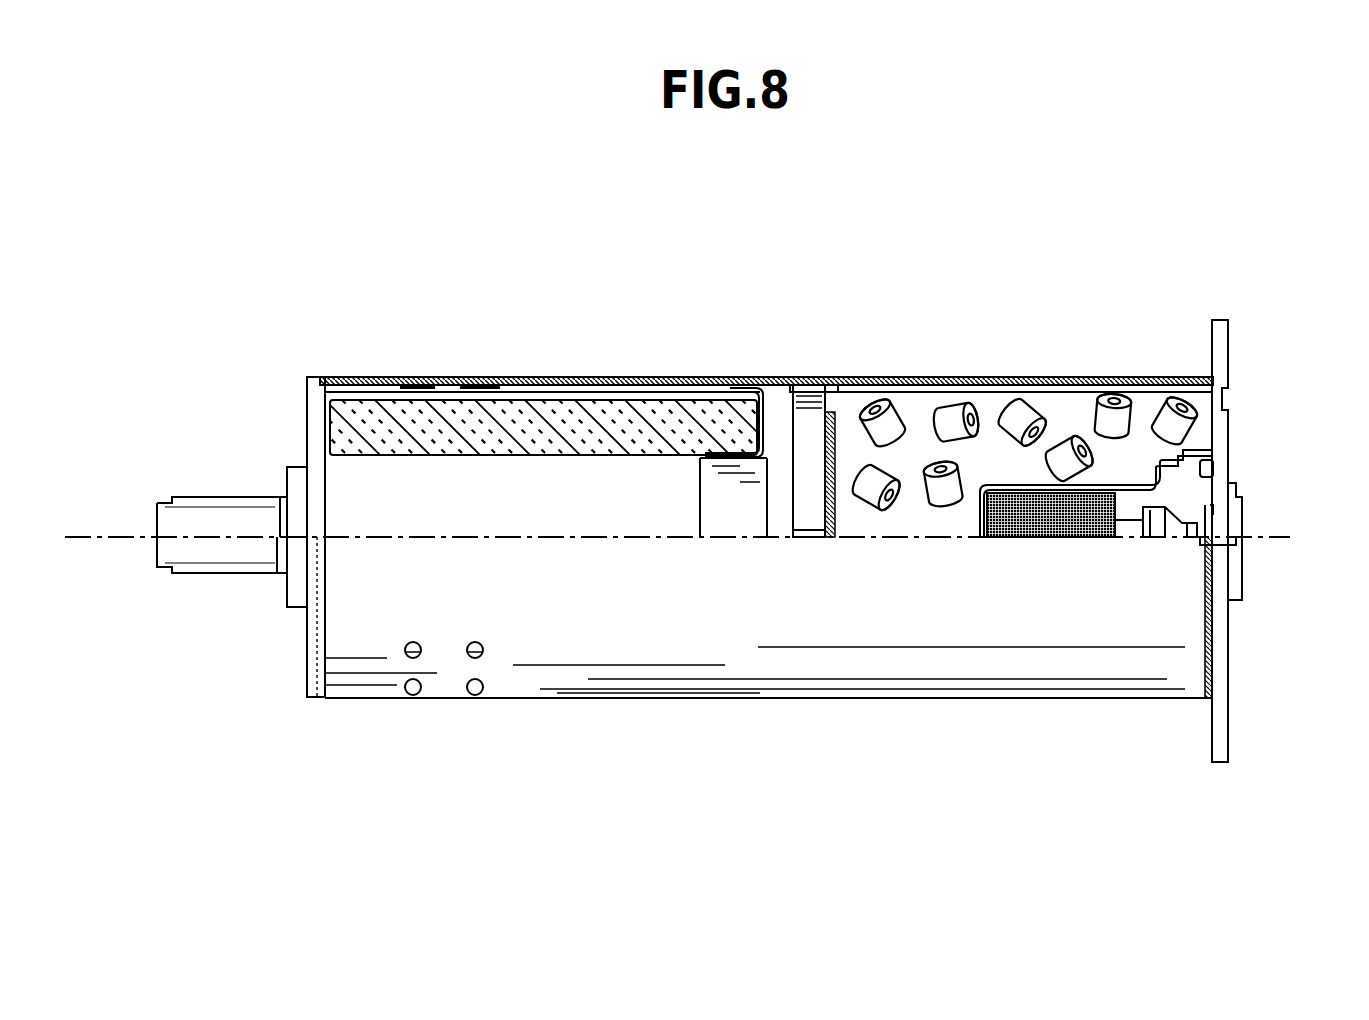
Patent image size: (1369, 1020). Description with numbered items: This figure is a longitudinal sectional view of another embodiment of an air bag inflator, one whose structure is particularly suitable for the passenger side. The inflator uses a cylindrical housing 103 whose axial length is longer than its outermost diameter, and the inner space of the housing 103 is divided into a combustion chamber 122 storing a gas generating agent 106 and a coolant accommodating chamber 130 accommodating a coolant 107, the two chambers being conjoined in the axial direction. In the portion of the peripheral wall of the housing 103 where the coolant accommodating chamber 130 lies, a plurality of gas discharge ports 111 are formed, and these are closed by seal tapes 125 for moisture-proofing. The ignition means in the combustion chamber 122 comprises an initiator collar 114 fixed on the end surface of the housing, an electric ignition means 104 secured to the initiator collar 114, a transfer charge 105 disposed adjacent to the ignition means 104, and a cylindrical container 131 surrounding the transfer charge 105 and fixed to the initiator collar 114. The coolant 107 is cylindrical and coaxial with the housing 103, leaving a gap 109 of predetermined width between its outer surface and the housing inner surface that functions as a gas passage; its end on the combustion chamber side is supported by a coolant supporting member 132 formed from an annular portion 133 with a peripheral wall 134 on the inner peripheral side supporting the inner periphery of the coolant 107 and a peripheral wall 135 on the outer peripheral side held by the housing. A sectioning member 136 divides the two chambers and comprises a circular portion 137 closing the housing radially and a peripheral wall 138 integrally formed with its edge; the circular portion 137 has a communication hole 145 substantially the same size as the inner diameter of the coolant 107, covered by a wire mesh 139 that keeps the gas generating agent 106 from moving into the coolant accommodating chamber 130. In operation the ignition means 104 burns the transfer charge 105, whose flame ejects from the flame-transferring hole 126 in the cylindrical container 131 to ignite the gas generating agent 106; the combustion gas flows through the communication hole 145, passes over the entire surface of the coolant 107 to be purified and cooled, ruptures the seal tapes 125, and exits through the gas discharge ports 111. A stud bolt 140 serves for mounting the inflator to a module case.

The cylindrical housing 103 is at (725, 607).
The ignition means 104 is at (1130, 540).
The transfer charge 105 is at (1080, 540).
The gas generating agent 106 is at (1197, 435).
The coolant 107 is at (543, 392).
The gap 109 is at (344, 380).
The gas discharge ports 111 is at (483, 692).
The initiator collar 114 is at (1198, 488).
The combustion chamber 122 is at (1141, 390).
The seal tapes 125 is at (352, 393).
The flame-transferring hole 126 is at (1030, 485).
The coolant accommodating chamber 130 is at (425, 470).
The cylindrical container 131 is at (980, 527).
The coolant supporting member 132 is at (885, 243).
The annular portion 133 is at (784, 398).
The peripheral wall of the inner peripheral side 134 is at (712, 398).
The peripheral wall of the outer peripheral side 135 is at (760, 398).
The sectioning member 136 is at (977, 262).
The circular portion 137 is at (850, 400).
The peripheral wall 138 is at (815, 393).
The wire mesh 139 is at (830, 522).
The stud bolt 140 is at (203, 516).
The communication hole 145 is at (810, 527).